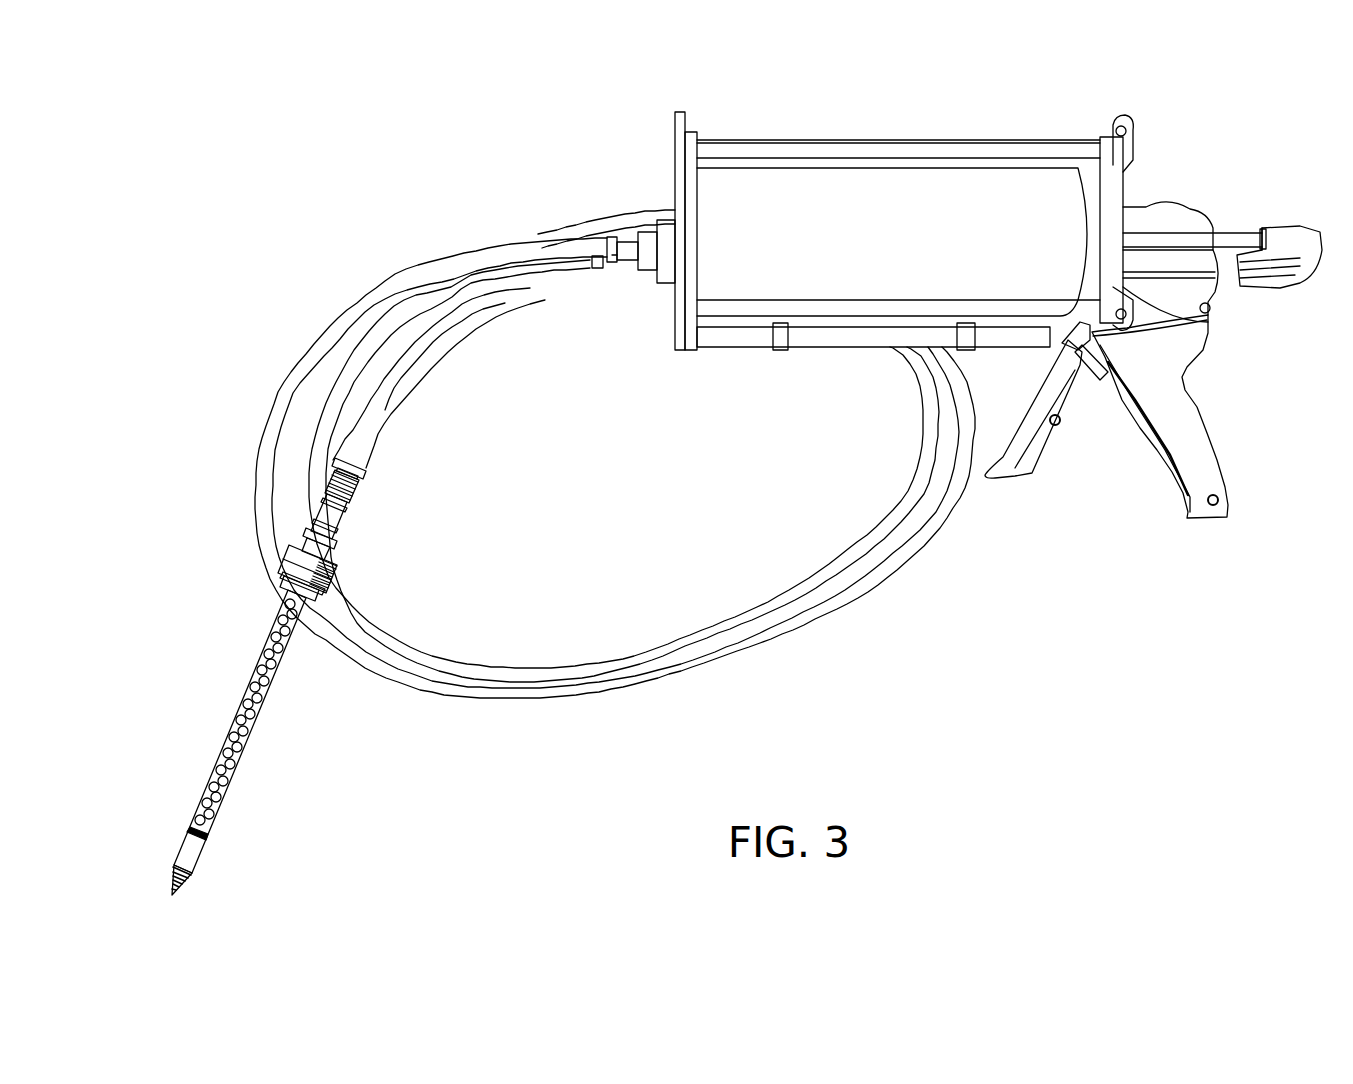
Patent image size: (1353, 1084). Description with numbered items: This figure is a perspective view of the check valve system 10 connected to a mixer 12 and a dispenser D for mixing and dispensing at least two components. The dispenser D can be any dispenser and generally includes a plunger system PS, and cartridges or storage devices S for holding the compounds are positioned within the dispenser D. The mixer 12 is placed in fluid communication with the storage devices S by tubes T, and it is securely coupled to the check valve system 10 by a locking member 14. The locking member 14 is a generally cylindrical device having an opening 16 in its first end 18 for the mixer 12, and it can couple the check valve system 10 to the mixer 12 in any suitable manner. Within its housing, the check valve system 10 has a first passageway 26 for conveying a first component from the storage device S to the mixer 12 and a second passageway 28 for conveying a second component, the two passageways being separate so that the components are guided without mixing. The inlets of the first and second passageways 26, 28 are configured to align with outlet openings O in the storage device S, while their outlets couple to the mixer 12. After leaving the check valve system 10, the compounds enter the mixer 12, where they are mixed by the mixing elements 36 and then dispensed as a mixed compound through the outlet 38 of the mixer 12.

The check valve system 10 is at (343, 527).
The mixer 12 is at (210, 746).
The locking member 14 is at (337, 568).
The opening 16 is at (287, 593).
The first end 18 is at (280, 577).
The first passageway 26 is at (323, 503).
The second passageway 28 is at (348, 512).
The mixing elements 36 is at (243, 722).
The outlet 38 is at (168, 897).
The storage devices S is at (876, 195).
The outlet openings O is at (612, 237).
The tubes T is at (827, 613).
The dispenser D is at (1153, 315).
The plunger system PS is at (1270, 282).